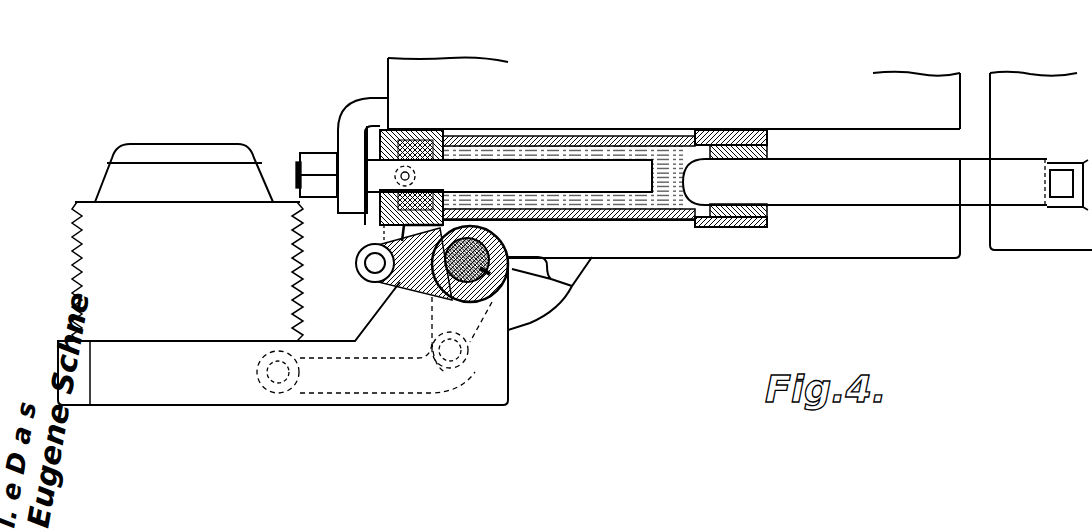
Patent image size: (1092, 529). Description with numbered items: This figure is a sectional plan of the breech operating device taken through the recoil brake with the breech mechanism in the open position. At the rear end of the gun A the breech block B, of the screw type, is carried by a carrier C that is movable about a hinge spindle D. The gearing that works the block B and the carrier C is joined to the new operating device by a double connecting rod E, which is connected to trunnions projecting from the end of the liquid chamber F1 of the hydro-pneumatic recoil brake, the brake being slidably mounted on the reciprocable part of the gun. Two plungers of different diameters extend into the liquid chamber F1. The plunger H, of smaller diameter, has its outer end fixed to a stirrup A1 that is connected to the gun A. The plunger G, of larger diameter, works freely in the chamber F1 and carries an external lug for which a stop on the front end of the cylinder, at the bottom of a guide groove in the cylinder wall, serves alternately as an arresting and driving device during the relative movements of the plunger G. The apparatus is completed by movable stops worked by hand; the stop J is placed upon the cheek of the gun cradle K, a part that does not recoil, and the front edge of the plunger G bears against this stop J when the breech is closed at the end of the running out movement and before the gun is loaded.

The gun A is at (415, 73).
The stirrup A1 is at (350, 135).
The breech block B is at (130, 270).
The carrier C is at (118, 375).
The hinge spindle D is at (492, 297).
The connecting rod E is at (383, 229).
The liquid chamber F1 is at (667, 153).
The plunger G is at (815, 185).
The plunger H is at (522, 160).
The stop J is at (1063, 187).
The gun cradle K is at (1018, 90).